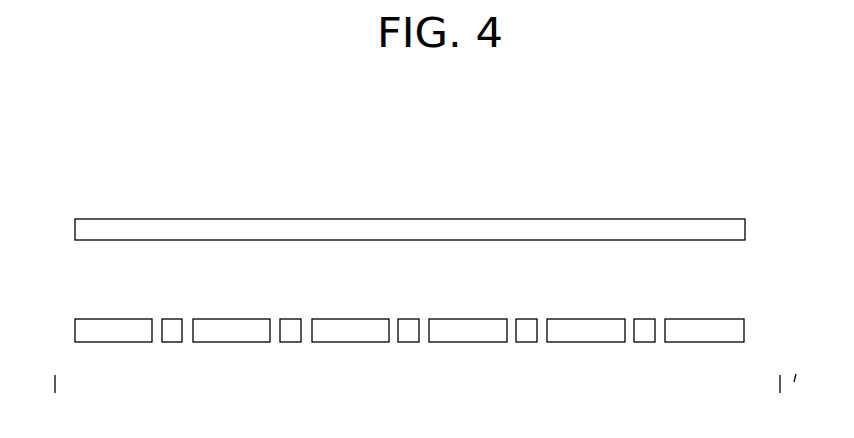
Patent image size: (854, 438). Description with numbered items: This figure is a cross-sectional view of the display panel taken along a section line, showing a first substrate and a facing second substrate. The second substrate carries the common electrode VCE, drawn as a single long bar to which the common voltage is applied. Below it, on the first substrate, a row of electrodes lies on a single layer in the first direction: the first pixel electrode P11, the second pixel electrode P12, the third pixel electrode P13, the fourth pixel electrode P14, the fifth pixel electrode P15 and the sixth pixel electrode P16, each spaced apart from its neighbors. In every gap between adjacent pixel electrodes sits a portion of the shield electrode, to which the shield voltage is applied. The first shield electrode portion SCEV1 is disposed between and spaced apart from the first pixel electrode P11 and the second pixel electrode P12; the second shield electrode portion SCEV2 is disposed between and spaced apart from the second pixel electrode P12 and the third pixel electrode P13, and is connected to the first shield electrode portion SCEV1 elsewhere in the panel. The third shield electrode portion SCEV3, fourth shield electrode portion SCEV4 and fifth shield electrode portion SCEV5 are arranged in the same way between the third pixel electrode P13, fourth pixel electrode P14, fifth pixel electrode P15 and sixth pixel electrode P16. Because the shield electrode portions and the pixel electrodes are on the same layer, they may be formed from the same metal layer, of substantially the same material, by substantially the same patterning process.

The common electrode VCE is at (410, 228).
The first pixel electrode P11 is at (105, 333).
The second pixel electrode P12 is at (232, 333).
The third pixel electrode P13 is at (350, 333).
The fourth pixel electrode P14 is at (467, 333).
The fifth pixel electrode P15 is at (585, 333).
The sixth pixel electrode P16 is at (710, 333).
The first shield electrode portion SCEV1 is at (173, 333).
The second shield electrode portion SCEV2 is at (290, 333).
The third shield electrode portion SCEV3 is at (408, 333).
The fourth shield electrode portion SCEV4 is at (525, 333).
The fifth shield electrode portion SCEV5 is at (647, 333).